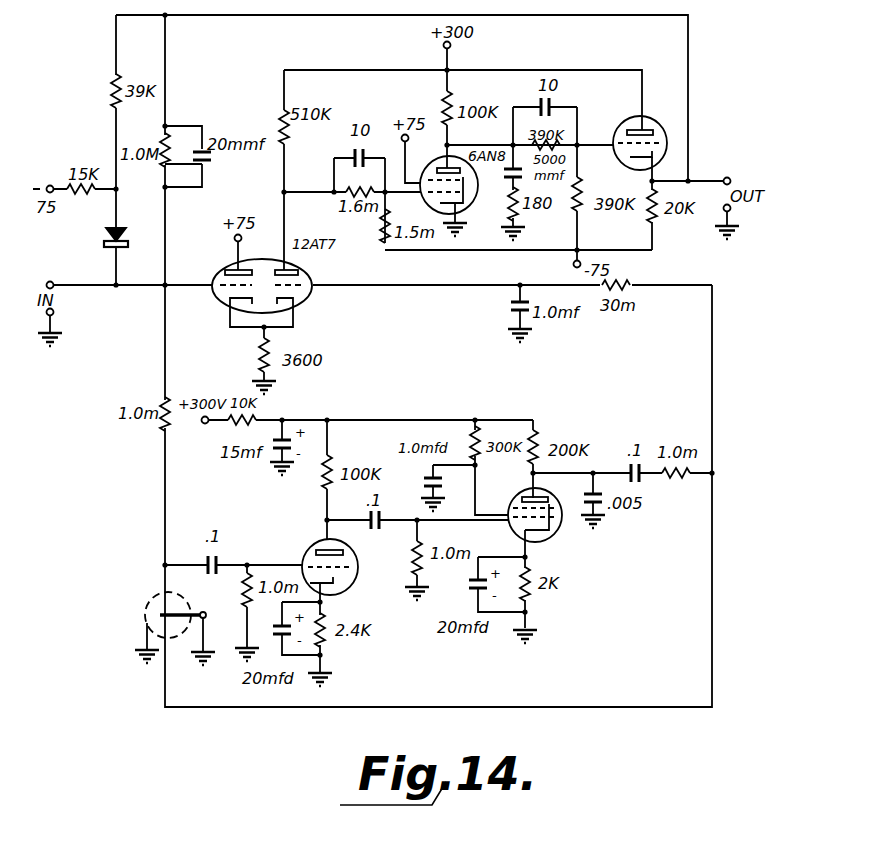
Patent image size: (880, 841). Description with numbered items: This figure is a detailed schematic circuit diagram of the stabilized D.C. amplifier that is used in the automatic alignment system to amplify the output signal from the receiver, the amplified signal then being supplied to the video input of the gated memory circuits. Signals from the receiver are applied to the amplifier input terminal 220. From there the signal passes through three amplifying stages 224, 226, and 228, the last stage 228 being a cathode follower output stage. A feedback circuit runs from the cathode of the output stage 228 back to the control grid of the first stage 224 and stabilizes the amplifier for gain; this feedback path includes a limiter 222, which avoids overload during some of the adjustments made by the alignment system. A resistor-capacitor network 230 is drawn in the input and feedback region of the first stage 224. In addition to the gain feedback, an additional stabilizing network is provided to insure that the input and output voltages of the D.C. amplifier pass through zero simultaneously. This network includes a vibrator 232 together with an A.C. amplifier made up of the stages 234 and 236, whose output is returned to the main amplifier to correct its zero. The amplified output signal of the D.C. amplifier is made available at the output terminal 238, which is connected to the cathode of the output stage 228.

The amplifier input terminal 220 is at (54, 282).
The limiter 222 is at (128, 246).
The stage 224 is at (250, 284).
The stage 226 is at (444, 178).
The cathode follower output stage 228 is at (631, 134).
The resistor-capacitor network 230 is at (184, 142).
The vibrator 232 is at (150, 601).
The stage 234 is at (322, 559).
The stage 236 is at (547, 523).
The output terminal 238 is at (731, 176).